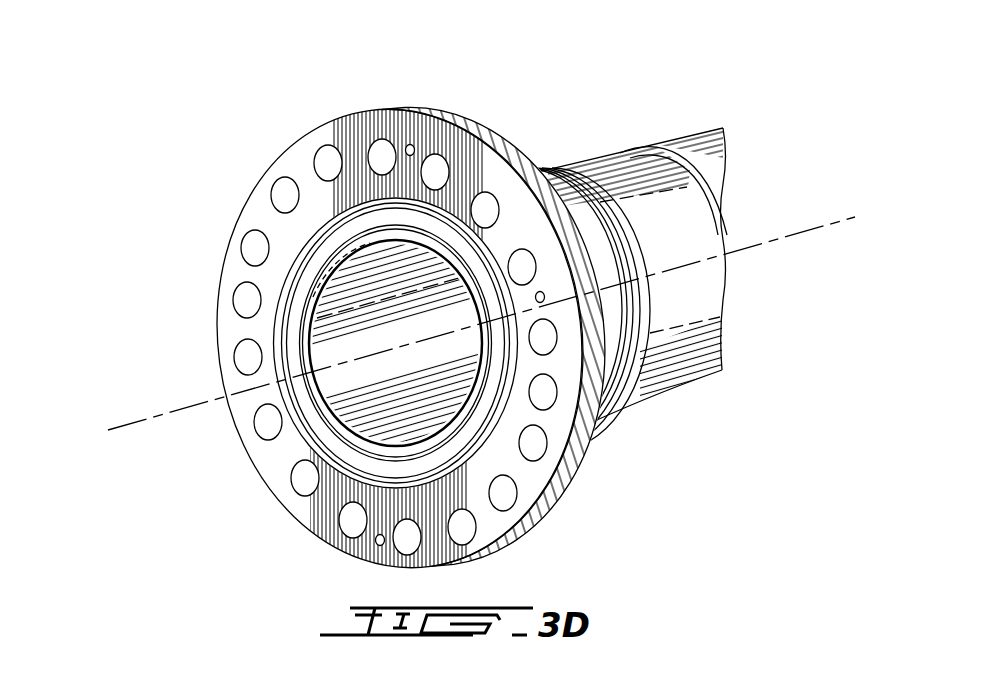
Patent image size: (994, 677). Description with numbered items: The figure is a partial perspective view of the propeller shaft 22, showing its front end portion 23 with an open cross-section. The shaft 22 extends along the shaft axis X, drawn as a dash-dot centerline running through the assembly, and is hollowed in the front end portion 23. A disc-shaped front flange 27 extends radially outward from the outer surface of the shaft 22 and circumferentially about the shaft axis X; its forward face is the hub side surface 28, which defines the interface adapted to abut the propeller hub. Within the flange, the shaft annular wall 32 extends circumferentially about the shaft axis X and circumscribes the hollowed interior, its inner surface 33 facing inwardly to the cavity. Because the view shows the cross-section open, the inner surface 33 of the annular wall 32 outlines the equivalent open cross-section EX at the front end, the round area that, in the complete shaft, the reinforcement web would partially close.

The propeller shaft 22 is at (581, 143).
The front end portion 23 is at (386, 87).
The front flange 27 is at (313, 122).
The hub side surface 28 is at (286, 166).
The shaft annular wall 32 is at (330, 251).
The inner surface 33 is at (313, 297).
The equivalent open cross-section EX is at (387, 398).
The shaft axis X is at (822, 222).